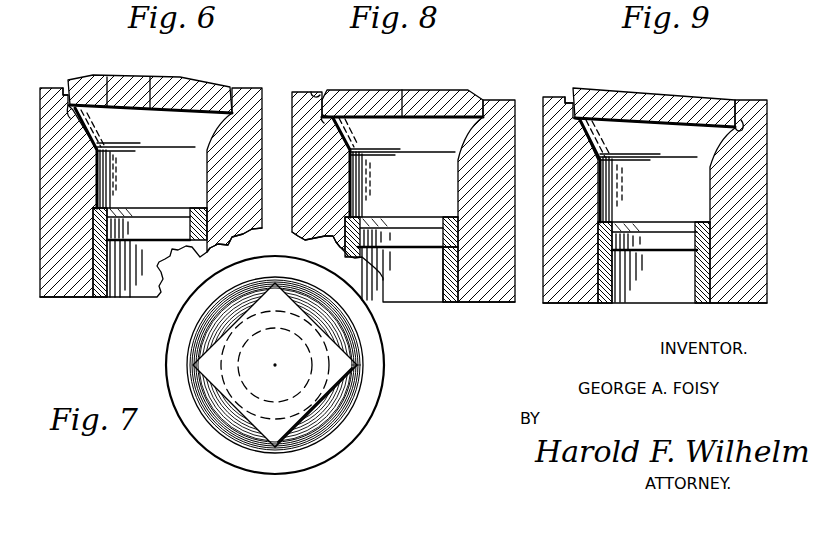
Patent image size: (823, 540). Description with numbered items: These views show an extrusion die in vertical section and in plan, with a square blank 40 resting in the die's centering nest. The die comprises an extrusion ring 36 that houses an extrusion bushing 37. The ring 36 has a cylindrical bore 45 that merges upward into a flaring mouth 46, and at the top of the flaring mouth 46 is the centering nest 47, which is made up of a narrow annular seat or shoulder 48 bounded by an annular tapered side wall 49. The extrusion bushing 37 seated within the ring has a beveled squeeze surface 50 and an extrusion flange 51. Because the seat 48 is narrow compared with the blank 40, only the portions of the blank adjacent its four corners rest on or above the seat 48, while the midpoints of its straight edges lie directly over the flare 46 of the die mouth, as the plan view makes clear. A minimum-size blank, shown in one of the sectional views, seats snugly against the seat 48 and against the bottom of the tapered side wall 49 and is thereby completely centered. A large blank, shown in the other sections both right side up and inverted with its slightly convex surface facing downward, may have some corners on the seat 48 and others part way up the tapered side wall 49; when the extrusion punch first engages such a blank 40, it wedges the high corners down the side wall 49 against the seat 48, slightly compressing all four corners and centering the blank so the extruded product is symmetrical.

In FIG. 6, the extrusion ring 36 is at (64, 280).
In FIG. 8, the extrusion ring 36 is at (487, 285).
In FIG. 9, the extrusion ring 36 is at (730, 285).
In FIG. 7, the extrusion ring 36 is at (180, 352).
In FIG. 6, the extrusion bushing 37 is at (100, 290).
In FIG. 8, the extrusion bushing 37 is at (447, 293).
In FIG. 9, the extrusion bushing 37 is at (600, 295).
In FIG. 7, the extrusion bushing 37 is at (357, 357).
In FIG. 6, the blank 40 is at (185, 90).
In FIG. 8, the blank 40 is at (427, 93).
In FIG. 9, the blank 40 is at (672, 97).
In FIG. 7, the blank 40 is at (247, 327).
In FIG. 6, the cylindrical bore 45 is at (108, 171).
In FIG. 8, the cylindrical bore 45 is at (352, 175).
In FIG. 9, the cylindrical bore 45 is at (615, 183).
In FIG. 7, the cylindrical bore 45 is at (313, 445).
In FIG. 6, the flaring mouth 46 is at (88, 132).
In FIG. 8, the flaring mouth 46 is at (345, 135).
In FIG. 9, the flaring mouth 46 is at (592, 137).
In FIG. 7, the flaring mouth 46 is at (320, 418).
In FIG. 6, the centering nest 47 is at (106, 104).
In FIG. 8, the centering nest 47 is at (486, 108).
In FIG. 9, the centering nest 47 is at (592, 118).
In FIG. 7, the centering nest 47 is at (349, 390).
In FIG. 6, the annular seat 48 is at (68, 115).
In FIG. 8, the annular seat 48 is at (323, 122).
In FIG. 9, the annular seat 48 is at (743, 125).
In FIG. 7, the annular seat 48 is at (212, 425).
In FIG. 6, the annular tapered side wall 49 is at (63, 88).
In FIG. 8, the annular tapered side wall 49 is at (312, 98).
In FIG. 9, the annular tapered side wall 49 is at (565, 100).
In FIG. 7, the annular tapered side wall 49 is at (192, 385).
In FIG. 6, the beveled squeeze surface 50 is at (193, 222).
In FIG. 8, the beveled squeeze surface 50 is at (448, 222).
In FIG. 9, the beveled squeeze surface 50 is at (700, 228).
In FIG. 6, the extrusion flange 51 is at (110, 232).
In FIG. 8, the extrusion flange 51 is at (380, 235).
In FIG. 9, the extrusion flange 51 is at (635, 225).